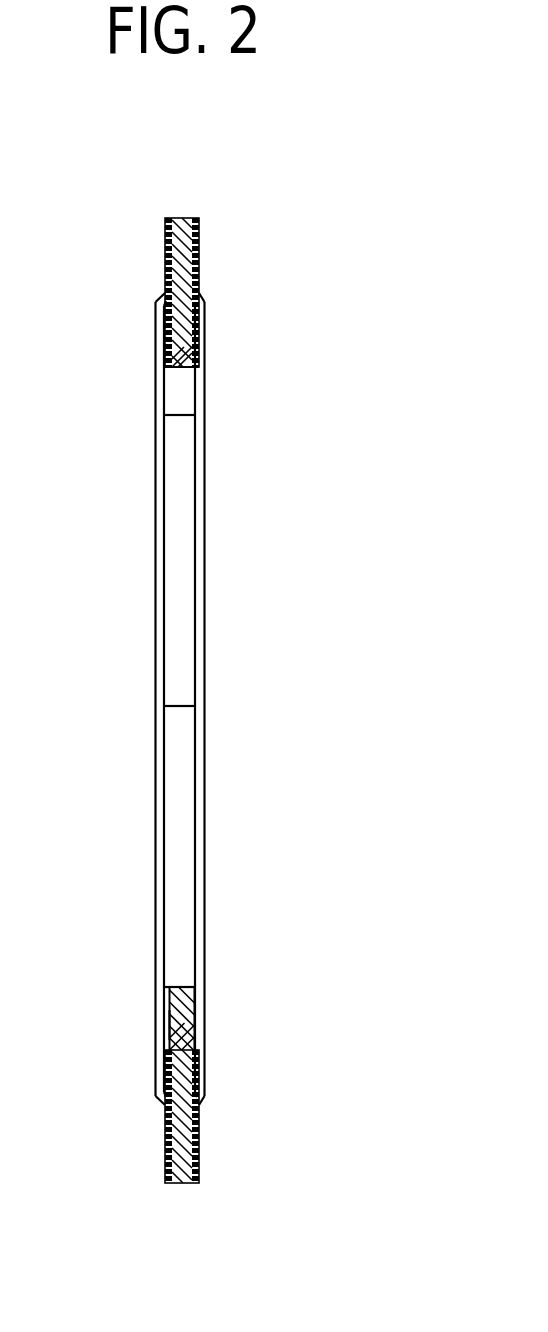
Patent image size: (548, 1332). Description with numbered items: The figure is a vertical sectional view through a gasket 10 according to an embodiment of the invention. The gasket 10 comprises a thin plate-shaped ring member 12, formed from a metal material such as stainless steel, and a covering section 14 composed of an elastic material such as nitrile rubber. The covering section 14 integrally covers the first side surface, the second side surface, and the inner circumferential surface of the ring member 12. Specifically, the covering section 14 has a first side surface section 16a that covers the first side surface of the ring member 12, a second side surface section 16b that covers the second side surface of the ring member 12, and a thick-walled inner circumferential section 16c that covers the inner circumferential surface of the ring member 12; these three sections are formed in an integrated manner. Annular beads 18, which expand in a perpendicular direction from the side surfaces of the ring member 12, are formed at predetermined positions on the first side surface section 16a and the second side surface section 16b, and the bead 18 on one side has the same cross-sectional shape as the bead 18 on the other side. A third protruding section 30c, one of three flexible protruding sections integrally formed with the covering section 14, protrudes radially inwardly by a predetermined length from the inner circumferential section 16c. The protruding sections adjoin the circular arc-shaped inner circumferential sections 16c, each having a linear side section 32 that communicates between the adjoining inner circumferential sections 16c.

The gasket 10 is at (296, 157).
The ring member 12 is at (210, 746).
The covering section 14 is at (200, 1140).
The first side surface section 16a is at (164, 259).
The second side surface section 16b is at (199, 265).
The inner circumferential section 16c is at (181, 368).
The annular bead 18 is at (155, 304).
The third protruding section 30c is at (170, 1025).
The linear side section 32 is at (180, 987).